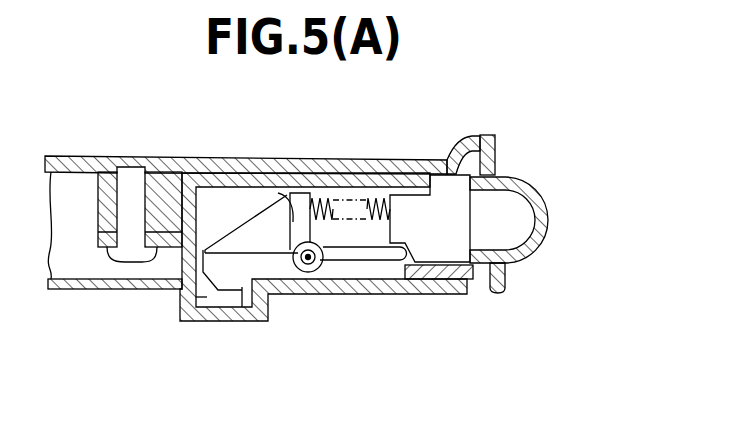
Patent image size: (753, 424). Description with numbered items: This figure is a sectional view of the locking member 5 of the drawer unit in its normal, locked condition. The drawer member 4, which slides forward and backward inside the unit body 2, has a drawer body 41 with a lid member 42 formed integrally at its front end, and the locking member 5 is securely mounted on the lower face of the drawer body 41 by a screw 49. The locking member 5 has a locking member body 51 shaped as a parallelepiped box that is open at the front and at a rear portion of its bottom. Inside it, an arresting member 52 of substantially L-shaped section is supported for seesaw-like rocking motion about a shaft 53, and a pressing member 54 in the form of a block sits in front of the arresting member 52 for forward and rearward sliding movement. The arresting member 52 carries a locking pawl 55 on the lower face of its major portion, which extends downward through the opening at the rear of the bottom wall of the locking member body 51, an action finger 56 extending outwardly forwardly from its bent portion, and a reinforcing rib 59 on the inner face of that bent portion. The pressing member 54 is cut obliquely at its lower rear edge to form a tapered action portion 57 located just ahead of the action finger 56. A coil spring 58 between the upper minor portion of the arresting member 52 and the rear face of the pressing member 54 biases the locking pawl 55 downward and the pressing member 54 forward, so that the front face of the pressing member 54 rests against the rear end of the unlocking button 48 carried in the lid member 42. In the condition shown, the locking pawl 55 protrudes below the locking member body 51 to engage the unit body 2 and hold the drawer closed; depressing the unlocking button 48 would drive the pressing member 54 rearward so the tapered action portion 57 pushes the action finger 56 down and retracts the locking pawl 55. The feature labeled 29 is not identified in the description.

The unit body 2 is at (74, 293).
The drawer member 4 is at (503, 151).
The locking member 5 is at (359, 286).
The lower wall 29 is at (200, 297).
The drawer body 41 is at (77, 162).
The lid member 42 is at (481, 133).
The unlocking button 48 is at (549, 218).
The screw 49 is at (130, 176).
The locking member body 51 is at (213, 165).
The arresting member 52 is at (277, 193).
The shaft 53 is at (308, 272).
The pressing member 54 is at (410, 213).
The locking pawl 55 is at (242, 300).
The action finger 56 is at (392, 287).
The tapered action portion 57 is at (433, 295).
The coil spring 58 is at (345, 197).
The reinforcing rib 59 is at (243, 238).